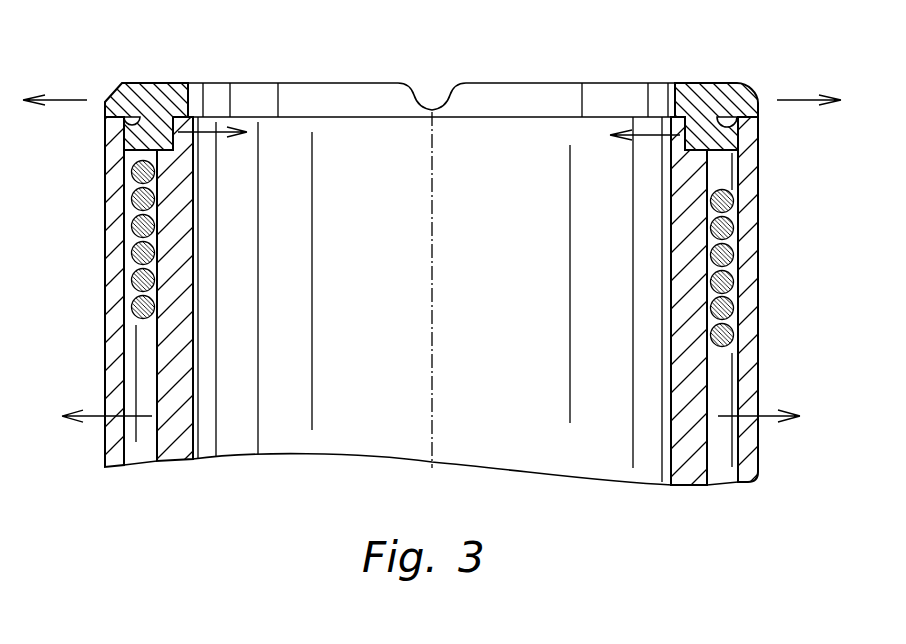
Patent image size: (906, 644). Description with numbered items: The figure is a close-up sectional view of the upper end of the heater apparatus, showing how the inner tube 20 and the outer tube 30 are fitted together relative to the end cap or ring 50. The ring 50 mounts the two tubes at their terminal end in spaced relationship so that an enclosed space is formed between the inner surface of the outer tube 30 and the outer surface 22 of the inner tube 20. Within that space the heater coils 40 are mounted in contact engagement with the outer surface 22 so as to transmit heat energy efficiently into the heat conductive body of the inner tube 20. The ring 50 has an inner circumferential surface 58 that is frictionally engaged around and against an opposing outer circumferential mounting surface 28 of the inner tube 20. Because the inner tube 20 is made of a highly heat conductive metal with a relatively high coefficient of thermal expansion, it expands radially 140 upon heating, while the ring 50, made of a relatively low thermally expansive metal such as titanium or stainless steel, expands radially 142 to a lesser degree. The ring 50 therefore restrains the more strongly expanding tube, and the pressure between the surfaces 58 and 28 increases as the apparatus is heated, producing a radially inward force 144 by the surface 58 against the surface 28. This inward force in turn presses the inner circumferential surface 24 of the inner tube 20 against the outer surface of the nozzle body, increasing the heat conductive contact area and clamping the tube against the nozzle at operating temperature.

The inner tube 20 is at (722, 381).
The outer surface of the inner tube 22 is at (707, 470).
The inner circumferential surface of the inner tube 24 is at (672, 470).
The outer circumferential mounting surface of the inner tube 28 is at (682, 142).
The outer tube 30 is at (761, 338).
The heater coils 40 is at (733, 226).
The ring 50 is at (138, 74).
The inner circumferential surface of the ring 58 is at (193, 119).
The radial expansion of the inner tube 140 is at (93, 418).
The radial expansion of the rings 142 is at (58, 101).
The radially inward force 144 is at (222, 140).